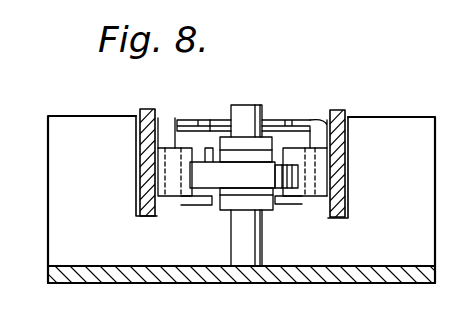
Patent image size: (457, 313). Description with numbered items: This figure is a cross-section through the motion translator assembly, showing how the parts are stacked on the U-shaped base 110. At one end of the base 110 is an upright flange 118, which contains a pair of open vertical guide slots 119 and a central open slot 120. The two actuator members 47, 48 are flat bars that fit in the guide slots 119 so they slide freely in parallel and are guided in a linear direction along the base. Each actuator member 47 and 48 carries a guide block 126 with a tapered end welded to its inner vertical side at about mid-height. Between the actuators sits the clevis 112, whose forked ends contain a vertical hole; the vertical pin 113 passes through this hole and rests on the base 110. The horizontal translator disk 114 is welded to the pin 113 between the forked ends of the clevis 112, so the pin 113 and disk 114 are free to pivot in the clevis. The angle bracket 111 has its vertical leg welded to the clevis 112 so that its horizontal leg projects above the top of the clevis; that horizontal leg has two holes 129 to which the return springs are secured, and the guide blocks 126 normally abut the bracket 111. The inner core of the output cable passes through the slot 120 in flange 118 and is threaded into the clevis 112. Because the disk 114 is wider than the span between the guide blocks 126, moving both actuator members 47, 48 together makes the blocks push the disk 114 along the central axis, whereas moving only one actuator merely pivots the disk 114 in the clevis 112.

The U-shaped base 110 is at (108, 283).
The upright flange 118 is at (68, 185).
The open vertical guide slots 119 is at (135, 135).
The actuator member 47 is at (166, 88).
The actuator member 48 is at (342, 110).
The vertical pin 113 is at (255, 107).
The angle bracket 111 is at (187, 119).
The central open slot 120 is at (217, 119).
The holes 129 is at (292, 124).
The guide block 126 is at (168, 197).
The horizontal translator disk 114 is at (222, 190).
The clevis 112 is at (280, 203).